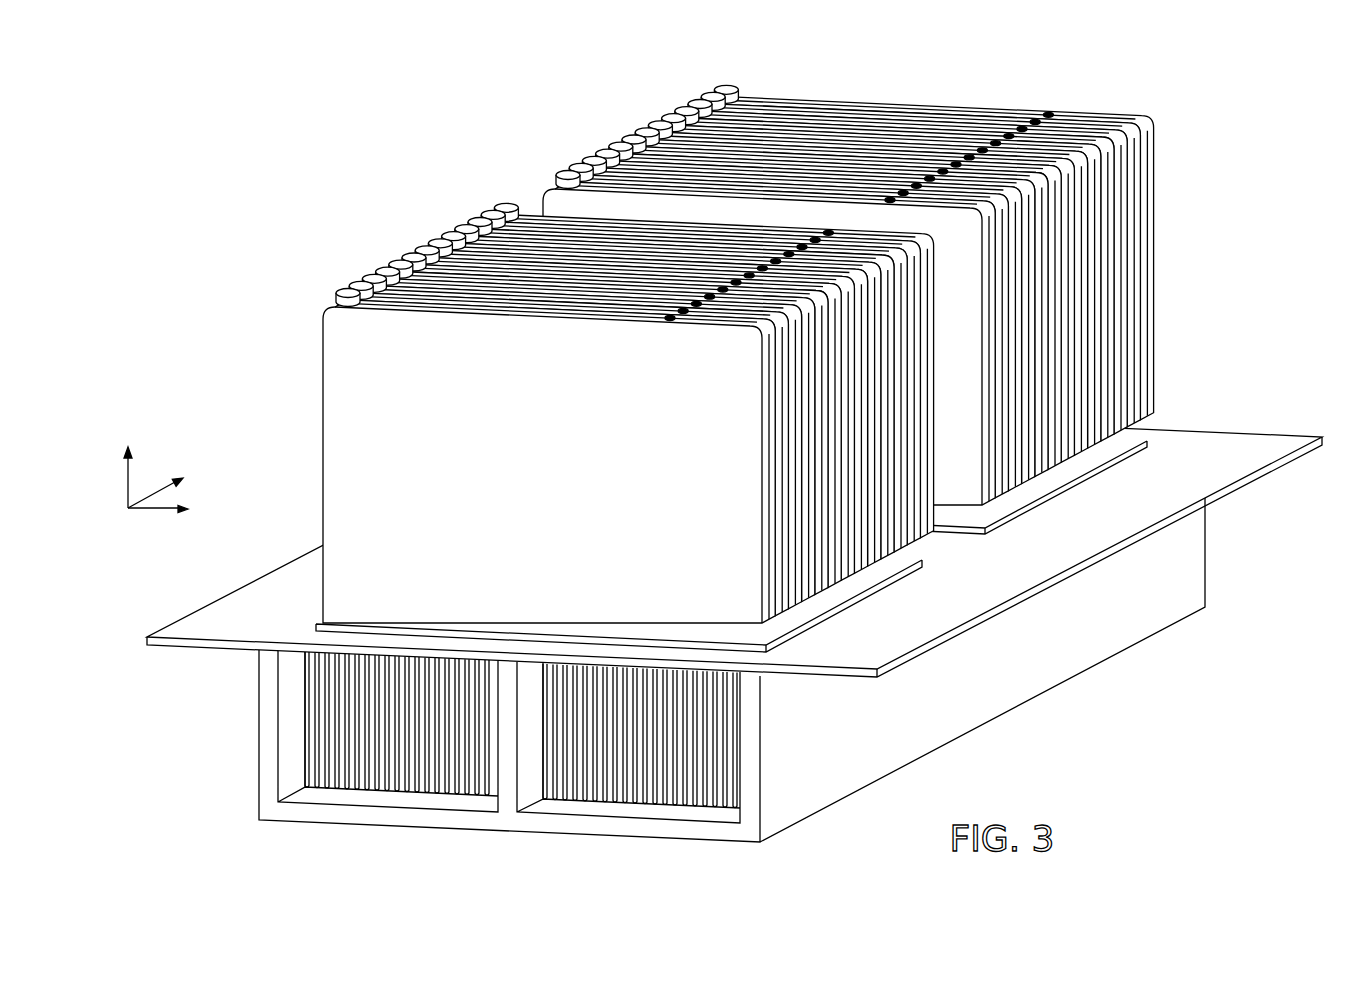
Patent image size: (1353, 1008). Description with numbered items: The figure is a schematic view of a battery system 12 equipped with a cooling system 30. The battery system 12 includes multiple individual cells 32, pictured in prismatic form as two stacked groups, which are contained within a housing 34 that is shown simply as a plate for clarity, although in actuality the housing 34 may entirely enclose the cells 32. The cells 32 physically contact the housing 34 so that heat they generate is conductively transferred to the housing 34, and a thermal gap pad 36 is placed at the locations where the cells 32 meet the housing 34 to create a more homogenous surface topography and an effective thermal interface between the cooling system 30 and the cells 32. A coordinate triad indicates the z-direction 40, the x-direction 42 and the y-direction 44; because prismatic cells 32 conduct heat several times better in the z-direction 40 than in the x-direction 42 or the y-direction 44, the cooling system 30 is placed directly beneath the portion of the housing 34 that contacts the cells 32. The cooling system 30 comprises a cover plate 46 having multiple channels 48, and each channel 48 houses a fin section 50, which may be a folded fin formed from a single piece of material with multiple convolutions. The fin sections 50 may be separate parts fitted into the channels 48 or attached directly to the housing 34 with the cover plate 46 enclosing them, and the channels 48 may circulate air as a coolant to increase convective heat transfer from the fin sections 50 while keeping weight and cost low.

The battery system 12 is at (699, 463).
The cooling system 30 is at (734, 641).
The cells 32 is at (495, 286).
The housing 34 is at (218, 625).
The thermal gap pad 36 is at (900, 577).
The z-direction 40 is at (142, 499).
The x-direction 42 is at (152, 492).
The y-direction 44 is at (160, 512).
The cover plate 46 is at (795, 801).
The channels 48 is at (550, 817).
The fin section 50 is at (375, 770).